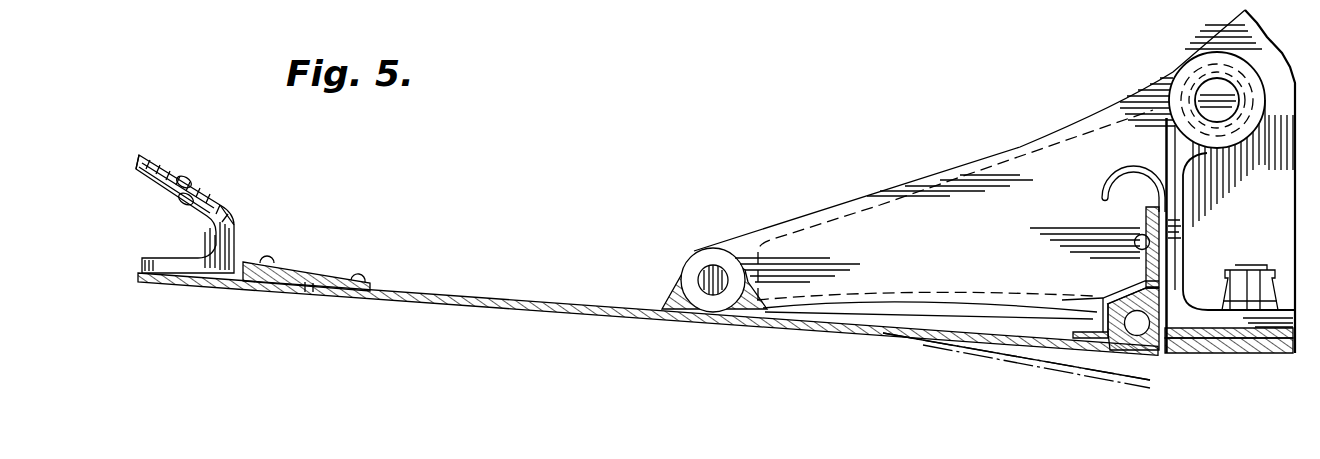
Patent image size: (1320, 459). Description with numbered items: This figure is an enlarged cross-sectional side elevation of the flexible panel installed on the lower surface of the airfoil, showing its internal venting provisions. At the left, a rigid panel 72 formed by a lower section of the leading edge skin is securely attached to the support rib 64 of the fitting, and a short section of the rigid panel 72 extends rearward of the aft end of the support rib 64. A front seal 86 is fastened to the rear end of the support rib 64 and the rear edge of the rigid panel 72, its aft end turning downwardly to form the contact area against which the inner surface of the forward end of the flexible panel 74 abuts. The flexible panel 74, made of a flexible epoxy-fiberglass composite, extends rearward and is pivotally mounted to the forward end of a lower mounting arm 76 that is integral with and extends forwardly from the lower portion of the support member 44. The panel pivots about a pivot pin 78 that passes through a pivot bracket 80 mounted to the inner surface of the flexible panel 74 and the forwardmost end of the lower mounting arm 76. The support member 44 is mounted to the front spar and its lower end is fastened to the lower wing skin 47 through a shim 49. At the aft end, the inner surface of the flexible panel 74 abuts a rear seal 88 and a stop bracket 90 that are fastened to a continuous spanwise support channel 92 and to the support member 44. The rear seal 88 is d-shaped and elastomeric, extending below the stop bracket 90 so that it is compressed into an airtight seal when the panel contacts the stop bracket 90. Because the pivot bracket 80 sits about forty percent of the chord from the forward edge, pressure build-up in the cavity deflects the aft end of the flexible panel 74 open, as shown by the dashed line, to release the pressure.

The support member 44 is at (1233, 40).
The lower wing skin 47 is at (1267, 355).
The shim 49 is at (1228, 350).
The support rib 64 is at (148, 160).
The rigid panel 72 is at (208, 287).
The flexible panel 74 is at (517, 311).
The lower mounting arm 76 is at (918, 258).
The pivot pin 78 is at (717, 290).
The pivot bracket 80 is at (678, 310).
The front seal 86 is at (353, 297).
The rear seal 88 is at (1122, 345).
The stop bracket 90 is at (1082, 343).
The support channel 92 is at (1105, 195).